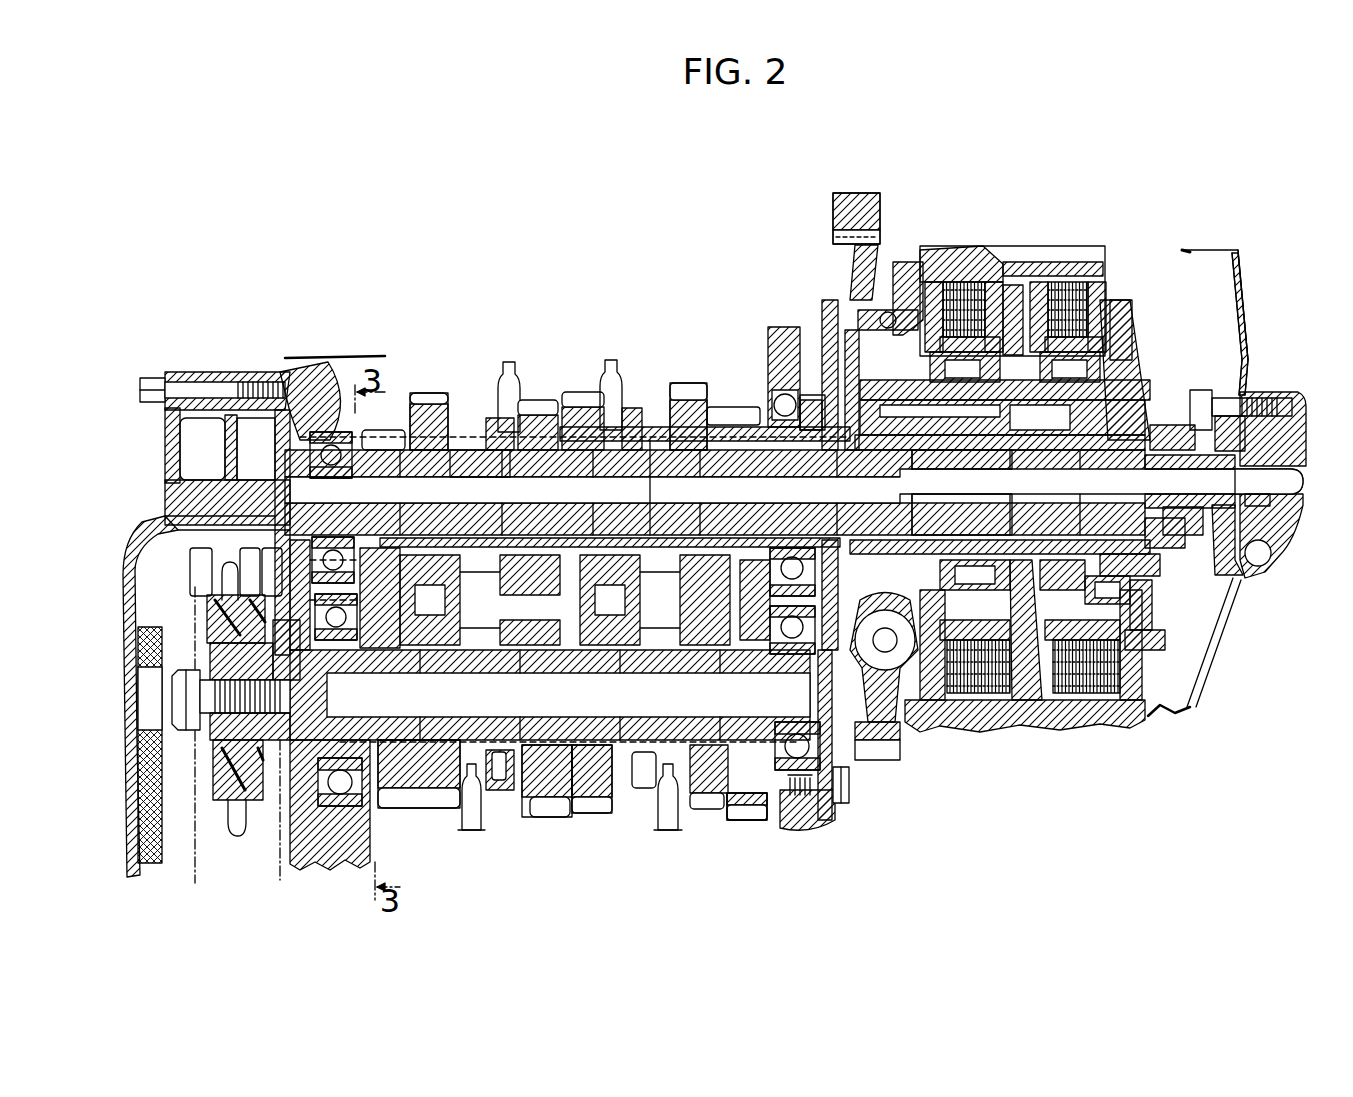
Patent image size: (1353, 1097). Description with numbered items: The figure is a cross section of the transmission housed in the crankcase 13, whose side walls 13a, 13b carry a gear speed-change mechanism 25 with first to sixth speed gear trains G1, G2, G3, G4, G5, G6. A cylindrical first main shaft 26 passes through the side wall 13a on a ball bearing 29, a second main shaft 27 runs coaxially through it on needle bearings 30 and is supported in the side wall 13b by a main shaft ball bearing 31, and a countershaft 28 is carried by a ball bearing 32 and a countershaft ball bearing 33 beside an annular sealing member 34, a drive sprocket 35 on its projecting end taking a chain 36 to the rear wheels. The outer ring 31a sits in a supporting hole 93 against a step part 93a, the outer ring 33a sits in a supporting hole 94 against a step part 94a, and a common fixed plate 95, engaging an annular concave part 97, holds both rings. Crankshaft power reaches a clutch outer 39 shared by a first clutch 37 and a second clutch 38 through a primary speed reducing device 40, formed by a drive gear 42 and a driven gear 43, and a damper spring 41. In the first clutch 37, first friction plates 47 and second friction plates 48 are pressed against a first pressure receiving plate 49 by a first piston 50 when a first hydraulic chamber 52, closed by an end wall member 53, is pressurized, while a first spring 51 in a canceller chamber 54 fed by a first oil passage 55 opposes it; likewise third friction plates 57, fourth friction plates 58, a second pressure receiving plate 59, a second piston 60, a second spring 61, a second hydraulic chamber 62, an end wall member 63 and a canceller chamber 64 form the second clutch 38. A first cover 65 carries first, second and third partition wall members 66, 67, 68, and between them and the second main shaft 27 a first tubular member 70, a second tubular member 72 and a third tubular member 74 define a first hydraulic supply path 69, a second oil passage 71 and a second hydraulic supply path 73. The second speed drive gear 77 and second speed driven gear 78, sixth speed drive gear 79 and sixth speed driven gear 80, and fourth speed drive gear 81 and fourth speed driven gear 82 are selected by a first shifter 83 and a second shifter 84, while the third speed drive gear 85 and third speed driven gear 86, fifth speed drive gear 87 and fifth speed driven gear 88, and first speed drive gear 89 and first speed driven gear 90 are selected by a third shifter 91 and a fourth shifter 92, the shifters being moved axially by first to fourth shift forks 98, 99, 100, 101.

The crankcase 13 is at (280, 372).
The side wall 13a is at (830, 300).
The side wall 13b is at (320, 365).
The gear speed-change mechanism 25 is at (740, 400).
The first main shaft 26 is at (650, 440).
The second main shaft 27 is at (470, 448).
The countershaft 28 is at (706, 812).
The ball bearing 29 is at (762, 400).
The needle bearings 30 is at (585, 470).
The main shaft ball bearing 31 is at (305, 458).
The outer ring 31a is at (300, 558).
The ball bearing 32 is at (848, 806).
The countershaft ball bearing 33 is at (335, 672).
The outer ring 33a is at (425, 693).
The annular sealing member 34 is at (258, 830).
The drive sprocket 35 is at (215, 628).
The chain 36 is at (185, 862).
The first clutch 37 is at (986, 256).
The second clutch 38 is at (1132, 292).
The clutch outer 39 is at (966, 246).
The primary speed reducing device 40 is at (884, 214).
The damper spring 41 is at (928, 700).
The drive gear 42 is at (833, 200).
The driven gear 43 is at (856, 240).
The first friction plates 47 is at (958, 290).
The second friction plates 48 is at (976, 700).
The first pressure receiving plate 49 is at (905, 262).
The first piston 50 is at (1008, 285).
The first spring 51 is at (882, 318).
The first hydraulic chamber 52 is at (1130, 365).
The end wall member 53 is at (1140, 338).
The canceller chamber 54 is at (1035, 262).
The first oil passage 55 is at (712, 500).
The third friction plates 57 is at (1096, 280).
The fourth friction plates 58 is at (1086, 695).
The second pressure receiving plate 59 is at (1030, 700).
The second piston 60 is at (1176, 712).
The second spring 61 is at (1130, 578).
The second hydraulic chamber 62 is at (1152, 600).
The end wall member 63 is at (1220, 615).
The canceller chamber 64 is at (1150, 640).
The first cover 65 is at (1246, 300).
The first partition wall member 66 is at (1272, 510).
The second partition wall member 67 is at (1247, 388).
The third partition wall member 68 is at (1240, 580).
The first hydraulic supply path 69 is at (978, 486).
The first tubular member 70 is at (1152, 423).
The second oil passage 71 is at (1290, 440).
The second tubular member 72 is at (1185, 520).
The second hydraulic supply path 73 is at (1272, 560).
The third tubular member 74 is at (1200, 388).
The second speed drive gear 77 is at (720, 405).
The second speed driven gear 78 is at (758, 822).
The sixth speed drive gear 79 is at (676, 383).
The sixth speed driven gear 80 is at (722, 822).
The fourth speed drive gear 81 is at (586, 392).
The fourth speed driven gear 82 is at (596, 808).
The first shifter 83 is at (645, 790).
The second shifter 84 is at (632, 405).
The third speed drive gear 85 is at (540, 398).
The third speed driven gear 86 is at (545, 818).
The fifth speed drive gear 87 is at (440, 395).
The fifth speed driven gear 88 is at (440, 810).
The first speed drive gear 89 is at (385, 428).
The first speed driven gear 90 is at (435, 858).
The third shifter 91 is at (490, 416).
The fourth shifter 92 is at (482, 800).
The supporting hole 93 is at (395, 560).
The step part 93a is at (340, 356).
The supporting hole 94 is at (330, 866).
The step part 94a is at (300, 866).
The fixed plate 95 is at (500, 560).
The annular concave part 97 is at (356, 870).
The first shift fork 98 is at (670, 835).
The second shift fork 99 is at (609, 358).
The third shift fork 100 is at (512, 360).
The fourth shift fork 101 is at (490, 845).
The first speed gear train G1 is at (424, 862).
The second speed gear train G2 is at (766, 822).
The third speed gear train G3 is at (543, 824).
The fourth speed gear train G4 is at (604, 816).
The fifth speed gear train G5 is at (430, 392).
The sixth speed gear train G6 is at (696, 384).